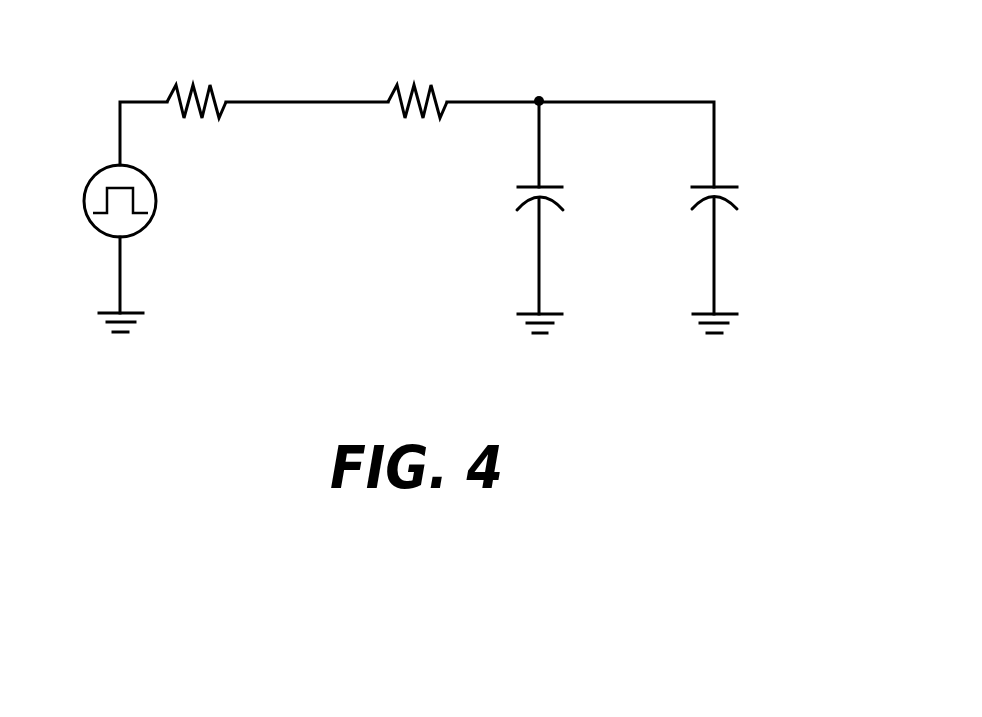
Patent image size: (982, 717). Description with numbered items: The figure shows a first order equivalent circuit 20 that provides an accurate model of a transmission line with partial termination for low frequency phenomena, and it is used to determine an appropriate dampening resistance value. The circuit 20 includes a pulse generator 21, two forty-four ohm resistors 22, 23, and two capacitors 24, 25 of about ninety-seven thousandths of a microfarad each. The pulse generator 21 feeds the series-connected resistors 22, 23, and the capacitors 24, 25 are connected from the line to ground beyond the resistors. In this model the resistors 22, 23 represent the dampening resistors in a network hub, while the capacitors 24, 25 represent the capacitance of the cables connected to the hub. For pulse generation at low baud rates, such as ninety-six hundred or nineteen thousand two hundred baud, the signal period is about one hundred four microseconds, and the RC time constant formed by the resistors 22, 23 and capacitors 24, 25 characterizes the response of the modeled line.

The circuit 20 is at (776, 46).
The pulse generator 21 is at (97, 229).
The 44 ohm resistor 22 is at (201, 119).
The 44 ohm resistor 23 is at (423, 120).
The 0.097 μF capacitor 24 is at (525, 196).
The 0.097 μF capacitor 25 is at (737, 197).